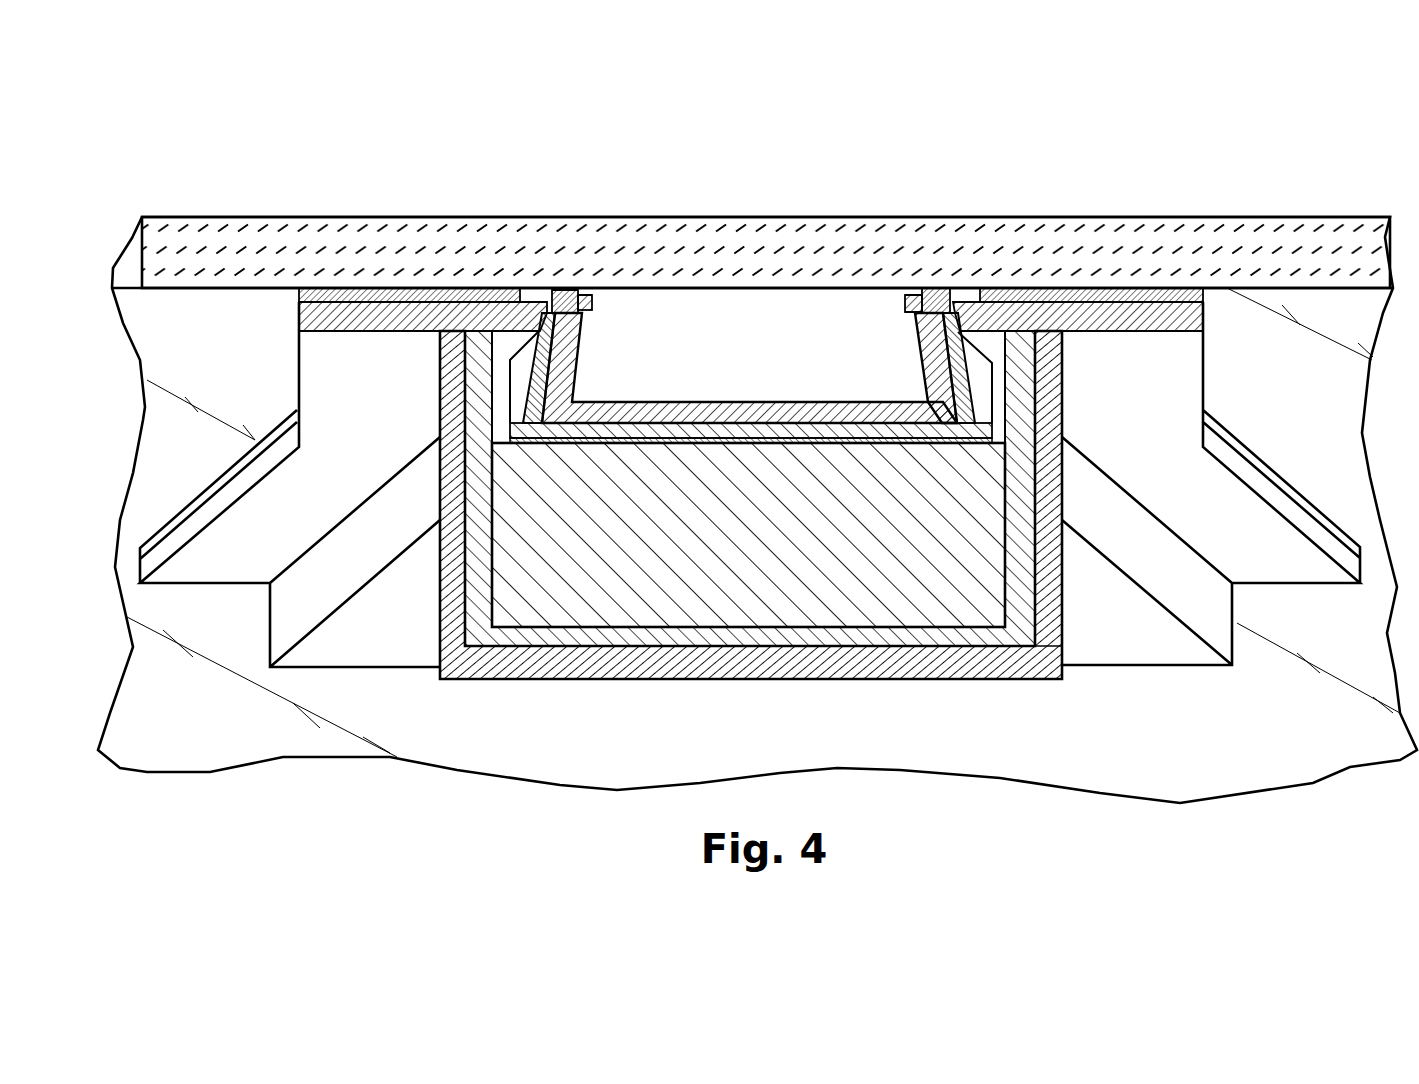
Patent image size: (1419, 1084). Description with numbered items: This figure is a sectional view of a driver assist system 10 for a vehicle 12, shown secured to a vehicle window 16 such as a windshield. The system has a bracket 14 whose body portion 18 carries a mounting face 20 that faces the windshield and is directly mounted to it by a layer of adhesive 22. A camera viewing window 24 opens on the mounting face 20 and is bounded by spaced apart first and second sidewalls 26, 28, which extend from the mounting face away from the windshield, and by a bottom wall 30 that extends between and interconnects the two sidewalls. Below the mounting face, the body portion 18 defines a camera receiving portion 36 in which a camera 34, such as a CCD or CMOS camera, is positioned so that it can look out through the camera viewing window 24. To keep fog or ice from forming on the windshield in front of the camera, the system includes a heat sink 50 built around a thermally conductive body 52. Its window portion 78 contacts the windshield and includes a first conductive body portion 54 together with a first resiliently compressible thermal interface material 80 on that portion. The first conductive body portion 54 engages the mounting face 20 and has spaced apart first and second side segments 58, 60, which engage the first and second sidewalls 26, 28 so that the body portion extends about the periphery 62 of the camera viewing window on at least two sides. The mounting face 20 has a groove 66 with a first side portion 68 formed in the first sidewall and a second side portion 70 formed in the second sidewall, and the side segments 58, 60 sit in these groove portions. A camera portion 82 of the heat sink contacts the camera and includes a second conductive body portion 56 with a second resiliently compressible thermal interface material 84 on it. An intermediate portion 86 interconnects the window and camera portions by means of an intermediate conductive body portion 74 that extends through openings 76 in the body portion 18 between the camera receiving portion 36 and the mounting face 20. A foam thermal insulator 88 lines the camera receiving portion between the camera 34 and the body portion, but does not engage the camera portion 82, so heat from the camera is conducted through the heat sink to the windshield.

The driver assist system 10 is at (102, 588).
The vehicle 12 is at (1347, 250).
The bracket 14 is at (1045, 665).
The vehicle window 16 is at (1167, 233).
The body portion 18 is at (1060, 645).
The mounting face 20 is at (330, 296).
The layer of adhesive 22 is at (299, 297).
The camera viewing window 24 is at (755, 318).
The first sidewall 26 is at (925, 378).
The second sidewall 28 is at (578, 367).
The bottom wall 30 is at (800, 402).
The camera 34 is at (905, 573).
The camera receiving portion 36 is at (477, 648).
The heat sink 50 is at (455, 425).
The thermally conductive body 52 is at (507, 382).
The first conductive body portion 54 is at (522, 288).
The second conductive body portion 56 is at (683, 430).
The first side segment 58 is at (947, 297).
The second side segment 60 is at (550, 288).
The periphery 62 is at (590, 288).
The groove 66 is at (905, 300).
The first side portion 68 is at (917, 305).
The second side portion 70 is at (578, 307).
The intermediate conductive body portion 74 is at (962, 380).
The openings 76 is at (545, 313).
The window portion 78 is at (940, 285).
The first resiliently compressible thermal interface material 80 is at (563, 288).
The camera portion 82 is at (740, 446).
The second resiliently compressible thermal interface material 84 is at (803, 443).
The intermediate portion 86 is at (528, 352).
The thermal insulator 88 is at (500, 635).